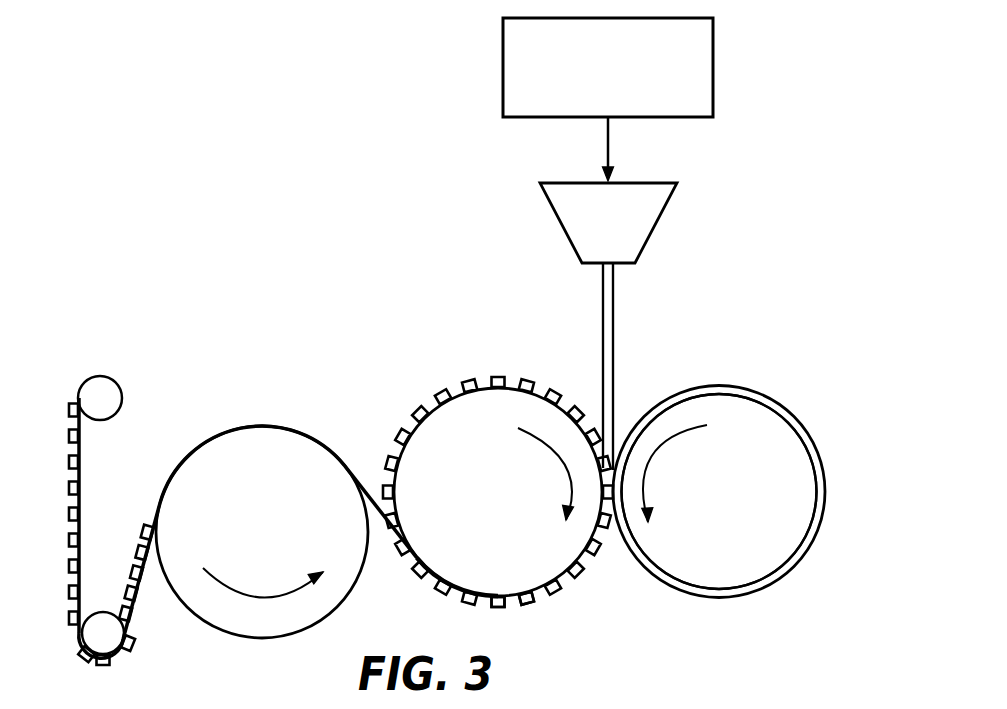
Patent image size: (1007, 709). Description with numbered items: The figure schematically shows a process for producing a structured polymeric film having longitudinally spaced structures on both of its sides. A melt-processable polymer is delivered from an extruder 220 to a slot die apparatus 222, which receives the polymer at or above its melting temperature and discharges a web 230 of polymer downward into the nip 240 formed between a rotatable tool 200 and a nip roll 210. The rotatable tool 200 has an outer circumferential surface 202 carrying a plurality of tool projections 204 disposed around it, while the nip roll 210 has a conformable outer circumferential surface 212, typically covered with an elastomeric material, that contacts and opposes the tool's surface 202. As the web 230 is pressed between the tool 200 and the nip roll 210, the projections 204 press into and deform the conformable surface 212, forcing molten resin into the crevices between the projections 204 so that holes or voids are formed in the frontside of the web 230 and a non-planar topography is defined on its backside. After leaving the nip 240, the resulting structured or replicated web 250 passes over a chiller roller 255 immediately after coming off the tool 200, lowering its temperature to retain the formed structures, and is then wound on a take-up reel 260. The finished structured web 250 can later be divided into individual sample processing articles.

The rotatable tool 200 is at (395, 416).
The outer circumferential surface 202 is at (484, 386).
The tool projections 204 is at (442, 394).
The nip roll 210 is at (768, 378).
The conformable outer circumferential surface 212 is at (650, 405).
The extruder 220 is at (713, 62).
The slot die apparatus 222 is at (668, 203).
The web 230 is at (616, 294).
The nip 240 is at (593, 413).
The structured or replicated web 250 is at (541, 593).
The chiller roller 255 is at (281, 426).
The take-up reel 260 is at (117, 376).